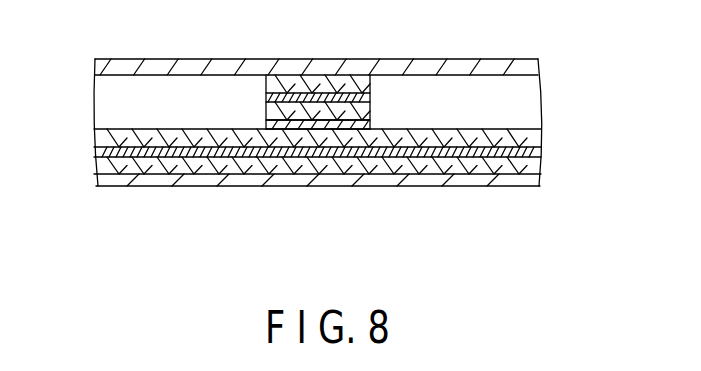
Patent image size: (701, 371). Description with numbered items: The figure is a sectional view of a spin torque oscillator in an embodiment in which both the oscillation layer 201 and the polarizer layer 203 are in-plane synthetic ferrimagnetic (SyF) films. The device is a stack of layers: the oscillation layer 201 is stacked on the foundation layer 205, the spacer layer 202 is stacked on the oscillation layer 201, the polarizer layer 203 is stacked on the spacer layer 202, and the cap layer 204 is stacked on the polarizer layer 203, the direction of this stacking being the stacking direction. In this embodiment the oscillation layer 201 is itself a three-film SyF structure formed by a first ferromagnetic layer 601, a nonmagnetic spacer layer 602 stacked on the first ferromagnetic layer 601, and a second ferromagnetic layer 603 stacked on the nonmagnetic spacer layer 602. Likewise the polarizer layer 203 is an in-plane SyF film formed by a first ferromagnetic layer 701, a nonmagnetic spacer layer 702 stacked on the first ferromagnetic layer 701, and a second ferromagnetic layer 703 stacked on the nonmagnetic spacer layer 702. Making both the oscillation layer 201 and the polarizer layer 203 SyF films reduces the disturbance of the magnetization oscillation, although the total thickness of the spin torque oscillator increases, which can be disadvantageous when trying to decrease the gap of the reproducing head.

The oscillation layer 201 is at (88, 128).
The spacer layer 202 is at (328, 127).
The polarizer layer 203 is at (256, 78).
The cap layer 204 is at (260, 70).
The foundation layer 205 is at (197, 180).
The first ferromagnetic layer 601 is at (370, 110).
The nonmagnetic spacer layer 602 is at (364, 100).
The second ferromagnetic layer 603 is at (333, 79).
The first ferromagnetic layer 701 is at (502, 166).
The nonmagnetic spacer layer 702 is at (540, 150).
The second ferromagnetic layer 703 is at (540, 131).